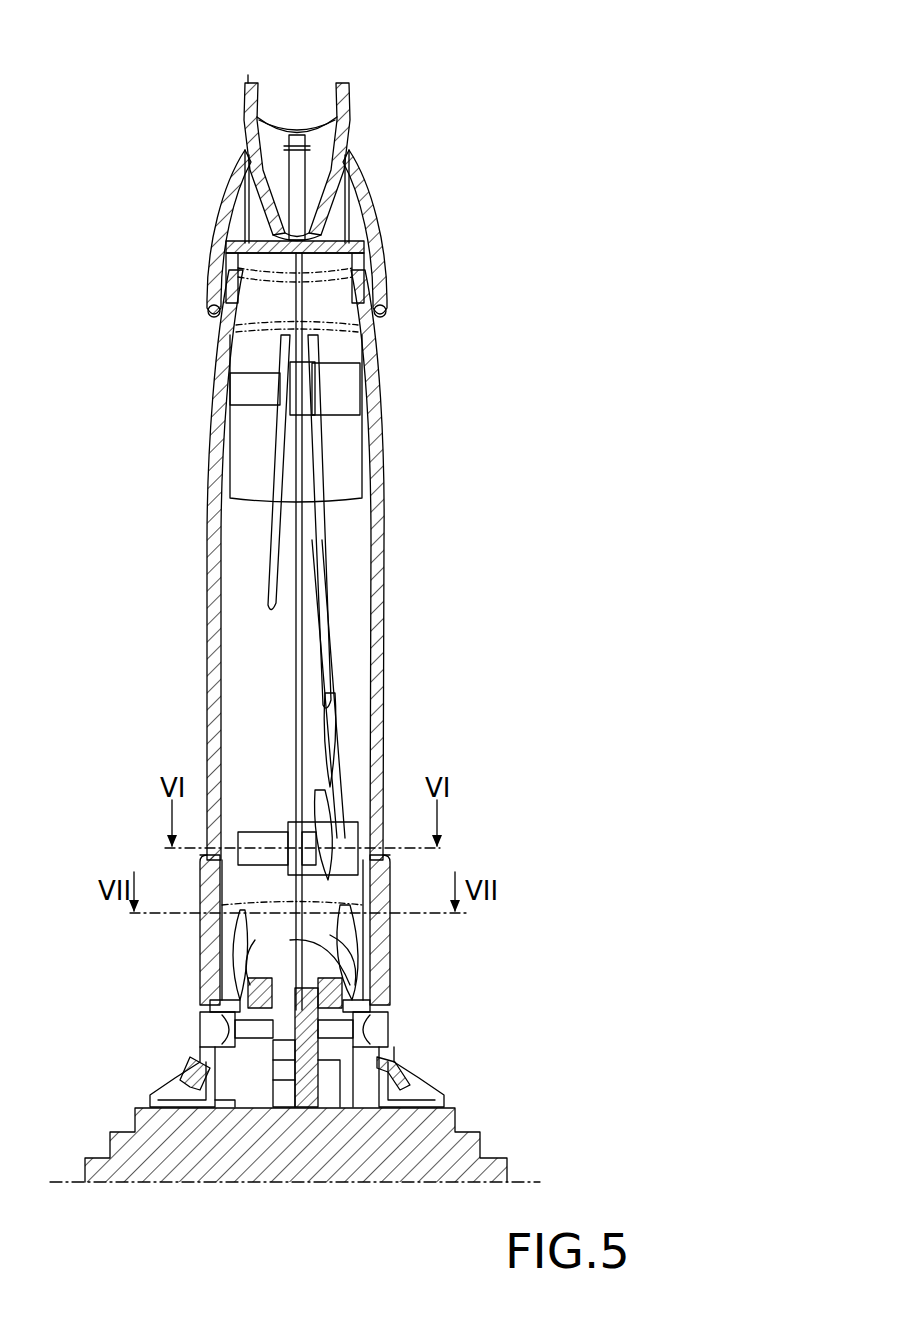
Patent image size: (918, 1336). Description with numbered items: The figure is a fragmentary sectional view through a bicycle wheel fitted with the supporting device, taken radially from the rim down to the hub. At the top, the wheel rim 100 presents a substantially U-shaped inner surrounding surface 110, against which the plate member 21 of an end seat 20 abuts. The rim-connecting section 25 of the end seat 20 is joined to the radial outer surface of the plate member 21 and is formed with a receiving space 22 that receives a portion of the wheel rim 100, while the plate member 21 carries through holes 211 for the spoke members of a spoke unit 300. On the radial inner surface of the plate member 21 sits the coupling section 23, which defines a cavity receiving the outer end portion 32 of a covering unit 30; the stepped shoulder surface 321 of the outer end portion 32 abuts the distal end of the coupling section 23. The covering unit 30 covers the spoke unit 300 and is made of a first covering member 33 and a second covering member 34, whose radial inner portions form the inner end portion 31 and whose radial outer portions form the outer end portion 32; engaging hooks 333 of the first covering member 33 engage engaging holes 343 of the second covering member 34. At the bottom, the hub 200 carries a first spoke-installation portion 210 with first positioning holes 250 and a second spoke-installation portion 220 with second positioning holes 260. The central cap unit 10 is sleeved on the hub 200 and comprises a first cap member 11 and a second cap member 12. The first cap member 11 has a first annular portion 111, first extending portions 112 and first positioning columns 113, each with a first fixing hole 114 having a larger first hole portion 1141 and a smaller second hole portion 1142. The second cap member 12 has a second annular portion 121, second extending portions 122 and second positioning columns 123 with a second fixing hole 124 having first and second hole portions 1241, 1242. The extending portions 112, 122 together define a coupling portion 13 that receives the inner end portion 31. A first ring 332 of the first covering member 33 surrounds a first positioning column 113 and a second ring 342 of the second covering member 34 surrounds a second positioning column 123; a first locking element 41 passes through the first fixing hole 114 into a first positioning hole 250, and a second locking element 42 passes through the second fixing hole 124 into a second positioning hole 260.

The wheel rim 100 is at (247, 74).
The inner surrounding surface 110 is at (324, 233).
The end seat 20 is at (372, 160).
The rim-connecting section 25 is at (247, 210).
The receiving space 22 is at (246, 200).
The plate member 21 is at (318, 245).
The through hole 211 is at (302, 258).
The coupling section 23 is at (375, 270).
The outer end portion 32 is at (235, 265).
The stepped shoulder surface 321 is at (386, 296).
The covering unit 30 is at (296, 565).
The spoke unit 300 is at (333, 563).
The first covering member 33 is at (210, 628).
The second covering member 34 is at (383, 630).
The engaging hook 333 is at (300, 830).
The engaging hole 343 is at (320, 838).
The central cap unit 10 is at (301, 908).
The coupling portion 13 is at (205, 873).
The first extending portion 112 is at (205, 860).
The second extending portion 122 is at (385, 860).
The inner end portion 31 is at (228, 938).
The second spoke-installation portion 220 is at (350, 945).
The first spoke-installation portion 210 is at (252, 955).
The second positioning hole 260 is at (345, 960).
The first positioning hole 250 is at (250, 998).
The second ring 342 is at (345, 993).
The first ring 332 is at (240, 1005).
The first positioning column 113 is at (235, 1018).
The second positioning column 123 is at (375, 1005).
The second fixing hole 124 is at (372, 1030).
The second locking element 42 is at (395, 1052).
The second cap member 12 is at (300, 1093).
The second annular portion 121 is at (445, 1100).
The first annular portion 111 is at (150, 1100).
The first locking element 41 is at (300, 1050).
The first fixing hole 114 is at (271, 1149).
The first hole portion 1141 is at (268, 1045).
The second hole portion 1142 is at (275, 1090).
The first cap member 11 is at (182, 1108).
The second hole portion 1242 is at (328, 1062).
The first hole portion 1241 is at (360, 1060).
The hub 200 is at (512, 1170).